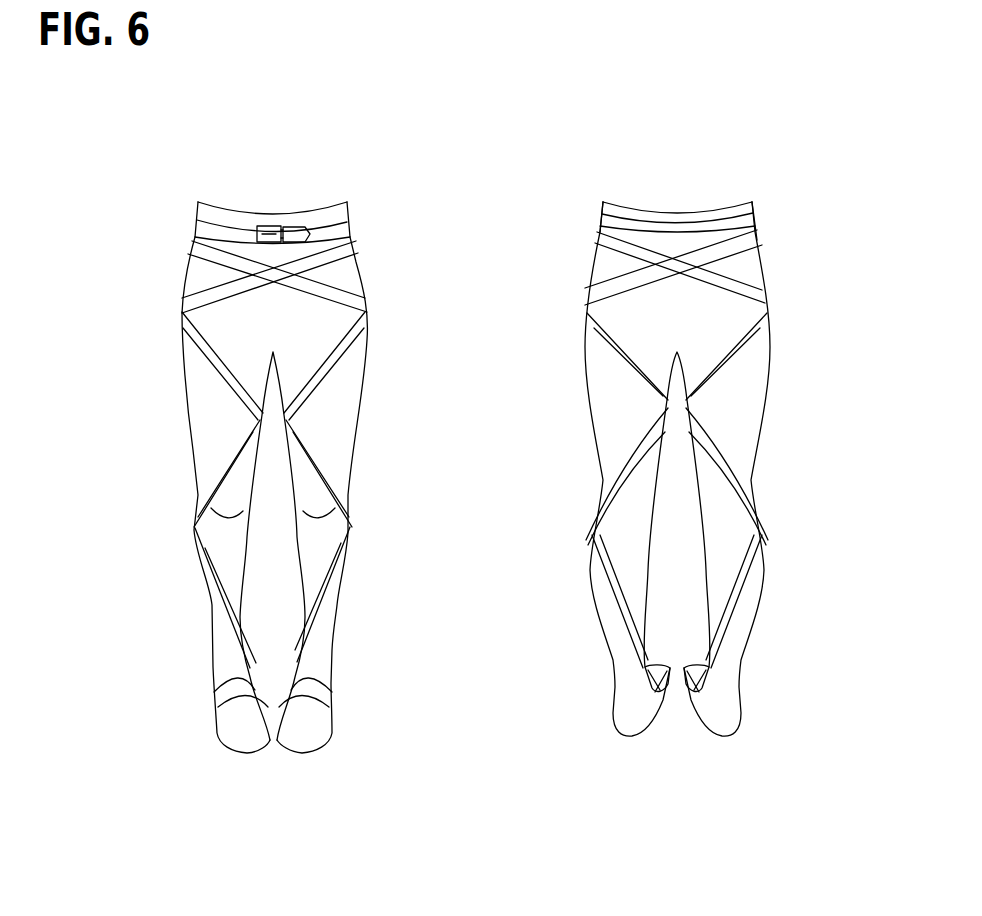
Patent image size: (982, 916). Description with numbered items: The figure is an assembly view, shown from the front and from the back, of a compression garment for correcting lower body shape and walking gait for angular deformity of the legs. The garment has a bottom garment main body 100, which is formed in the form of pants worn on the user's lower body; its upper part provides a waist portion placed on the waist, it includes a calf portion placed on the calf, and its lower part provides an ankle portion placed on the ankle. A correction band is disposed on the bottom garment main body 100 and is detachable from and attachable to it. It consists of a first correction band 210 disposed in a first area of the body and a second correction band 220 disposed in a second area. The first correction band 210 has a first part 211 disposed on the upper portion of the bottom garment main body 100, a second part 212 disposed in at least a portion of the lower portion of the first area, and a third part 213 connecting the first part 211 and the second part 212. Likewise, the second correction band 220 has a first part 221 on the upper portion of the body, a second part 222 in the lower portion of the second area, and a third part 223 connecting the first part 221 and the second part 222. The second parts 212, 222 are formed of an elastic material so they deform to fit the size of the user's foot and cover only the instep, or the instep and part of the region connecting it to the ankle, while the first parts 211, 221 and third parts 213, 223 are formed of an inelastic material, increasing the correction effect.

The bottom garment main body 100 is at (362, 194).
The first correction band 210 is at (205, 358).
The first part of the first correction band 211 is at (193, 231).
The second part of the first correction band 212 is at (223, 698).
The third part of the first correction band 213 is at (210, 593).
The second correction band 220 is at (353, 353).
The first part of the second correction band 221 is at (350, 225).
The second part of the second correction band 222 is at (332, 700).
The third part of the second correction band 223 is at (340, 593).